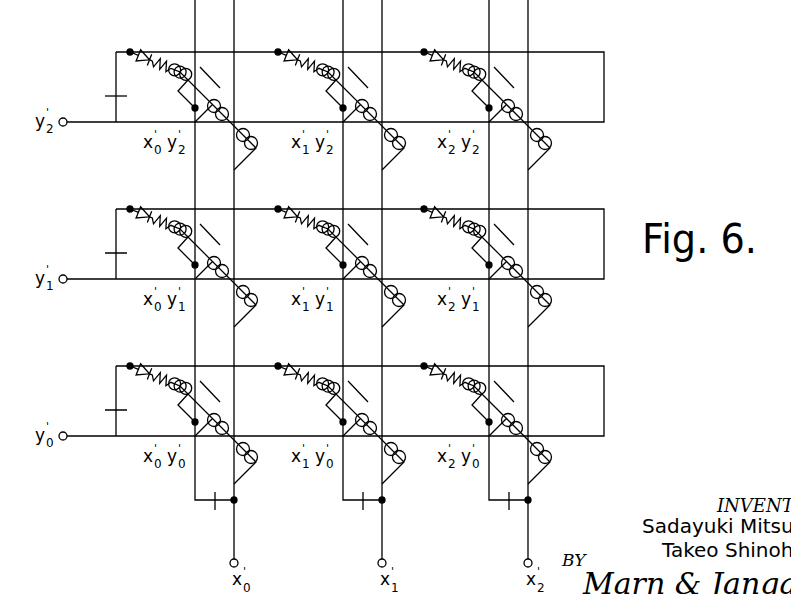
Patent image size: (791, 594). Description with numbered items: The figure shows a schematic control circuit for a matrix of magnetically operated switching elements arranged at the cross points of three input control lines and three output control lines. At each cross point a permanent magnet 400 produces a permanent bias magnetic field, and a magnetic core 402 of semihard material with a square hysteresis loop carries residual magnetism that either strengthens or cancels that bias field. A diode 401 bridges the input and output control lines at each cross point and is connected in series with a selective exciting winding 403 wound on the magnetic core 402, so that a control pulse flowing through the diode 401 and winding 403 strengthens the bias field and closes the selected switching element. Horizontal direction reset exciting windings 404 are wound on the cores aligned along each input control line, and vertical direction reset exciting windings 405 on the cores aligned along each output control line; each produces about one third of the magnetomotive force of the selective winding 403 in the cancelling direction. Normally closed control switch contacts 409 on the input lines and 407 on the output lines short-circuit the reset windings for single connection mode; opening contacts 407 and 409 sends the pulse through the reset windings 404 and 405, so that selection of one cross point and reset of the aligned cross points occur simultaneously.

The permanent magnet 400 is at (211, 76).
The diode 401 is at (142, 72).
The magnetic core 402 is at (170, 57).
The selective exciting winding 403 is at (180, 64).
The horizontal direction reset exciting winding 404 is at (226, 105).
The vertical direction reset exciting winding 405 is at (256, 140).
The vertical reset control switch contact 407 is at (211, 505).
The horizontal reset control switch contact 409 is at (113, 94).